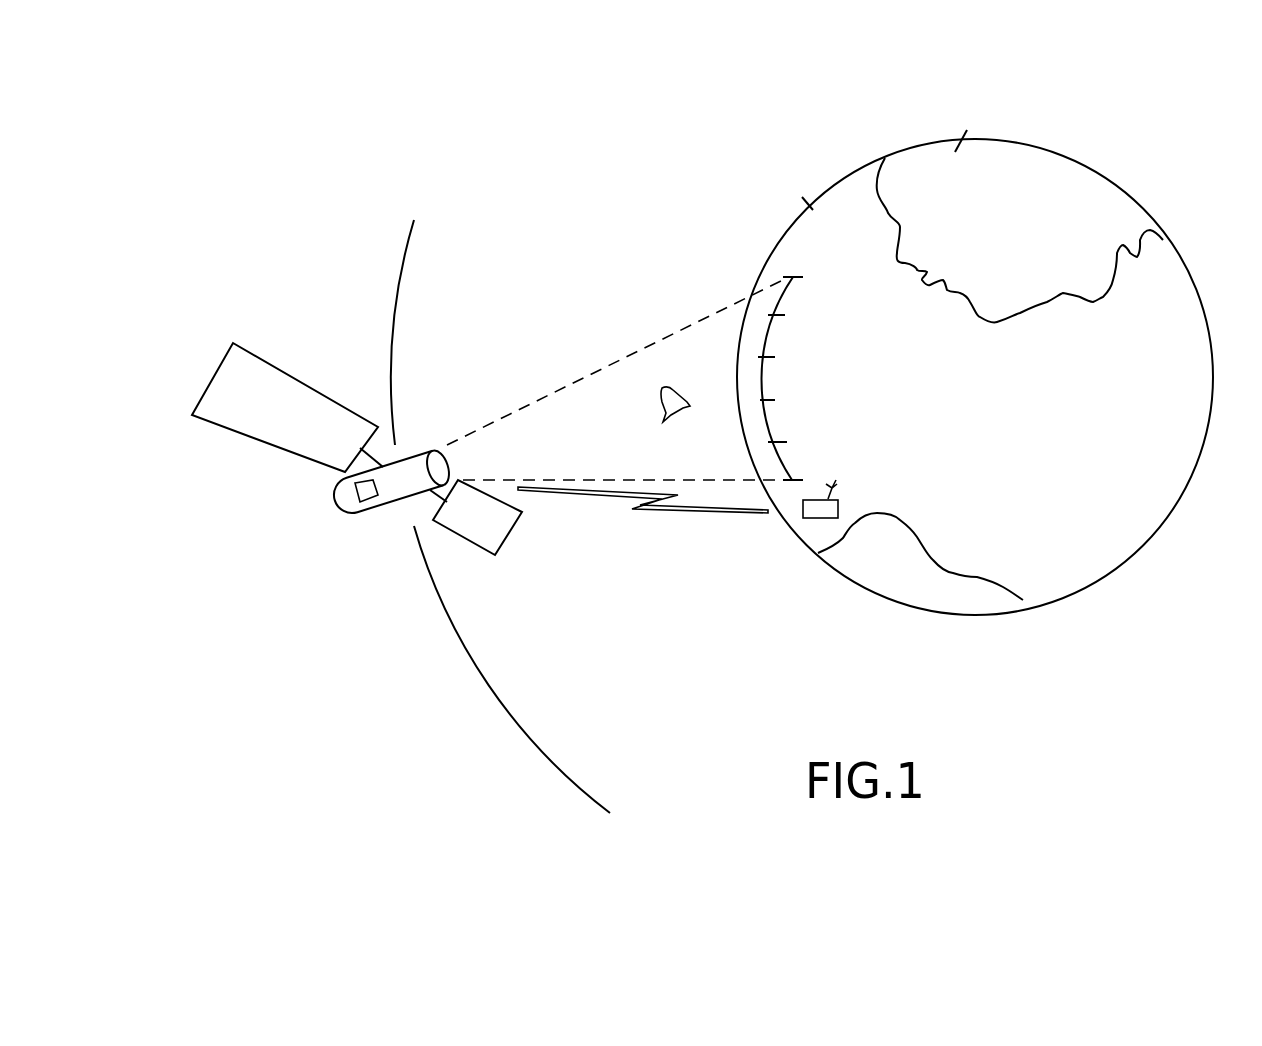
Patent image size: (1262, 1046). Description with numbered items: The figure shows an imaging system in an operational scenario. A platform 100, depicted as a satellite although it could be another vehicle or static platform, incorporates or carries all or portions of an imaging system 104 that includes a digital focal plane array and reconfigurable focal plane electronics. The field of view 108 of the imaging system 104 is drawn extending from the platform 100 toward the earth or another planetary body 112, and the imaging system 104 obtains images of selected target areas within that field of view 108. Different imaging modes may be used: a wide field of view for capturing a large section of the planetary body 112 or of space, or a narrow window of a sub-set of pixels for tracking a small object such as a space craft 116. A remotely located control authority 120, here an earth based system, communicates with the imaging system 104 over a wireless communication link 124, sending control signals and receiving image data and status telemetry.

The platform 100 is at (377, 510).
The imaging system 104 is at (357, 492).
The field of view 108 is at (678, 327).
The planetary body 112 is at (863, 168).
The space craft 116 is at (658, 388).
The control authority 120 is at (803, 512).
The communication link 124 is at (652, 512).